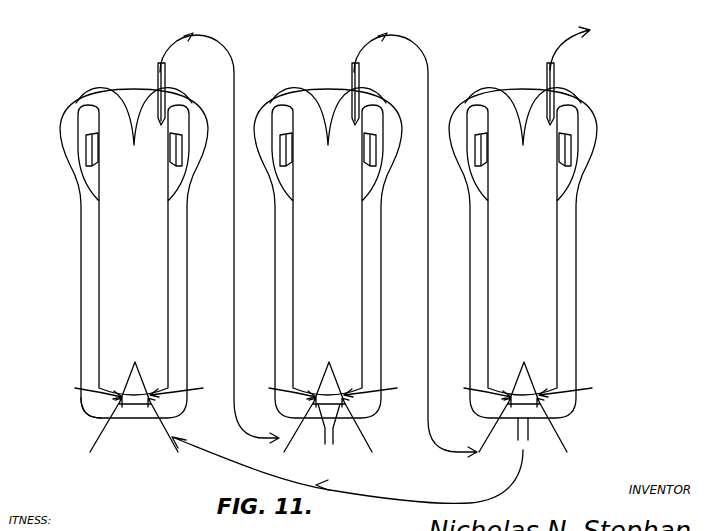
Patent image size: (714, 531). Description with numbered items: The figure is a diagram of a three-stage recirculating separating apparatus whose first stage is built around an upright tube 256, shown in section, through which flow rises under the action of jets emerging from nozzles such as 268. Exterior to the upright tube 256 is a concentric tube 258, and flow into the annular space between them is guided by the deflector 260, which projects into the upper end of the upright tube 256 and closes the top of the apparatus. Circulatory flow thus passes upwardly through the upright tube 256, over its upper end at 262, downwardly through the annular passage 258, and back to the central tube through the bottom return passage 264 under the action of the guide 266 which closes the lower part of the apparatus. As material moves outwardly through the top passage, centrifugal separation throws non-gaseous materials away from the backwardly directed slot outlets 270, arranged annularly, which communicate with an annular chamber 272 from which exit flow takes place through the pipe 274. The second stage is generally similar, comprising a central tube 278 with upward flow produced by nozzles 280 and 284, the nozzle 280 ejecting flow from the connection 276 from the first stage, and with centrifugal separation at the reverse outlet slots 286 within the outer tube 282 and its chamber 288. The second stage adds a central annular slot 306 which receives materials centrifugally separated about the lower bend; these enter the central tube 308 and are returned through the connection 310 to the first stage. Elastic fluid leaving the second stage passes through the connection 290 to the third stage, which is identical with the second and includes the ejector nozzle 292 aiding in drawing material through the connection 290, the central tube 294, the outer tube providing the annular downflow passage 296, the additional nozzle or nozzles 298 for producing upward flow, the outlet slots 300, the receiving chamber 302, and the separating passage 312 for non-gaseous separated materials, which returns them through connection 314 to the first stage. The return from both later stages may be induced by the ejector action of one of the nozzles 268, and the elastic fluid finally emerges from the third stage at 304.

The upright tube 256 is at (102, 263).
The concentric tube 258 is at (80, 291).
The deflector 260 is at (128, 120).
The upper end of tube 262 is at (78, 108).
The bottom return passage 264 is at (95, 416).
The guide 266 is at (133, 410).
The nozzles 268 is at (139, 387).
The backwardly directed slot outlets 270 is at (98, 152).
The annular chamber 272 is at (182, 118).
The pipe 274 is at (168, 80).
The connection 276 is at (235, 102).
The central tube 278 is at (327, 297).
The nozzle 280 is at (279, 388).
The outer casing wall 282 is at (322, 253).
The nozzle 284 is at (382, 388).
The reverse outlet slots 286 is at (328, 155).
The pocket 288 is at (327, 136).
The connection 290 is at (415, 245).
The ejector nozzle 292 is at (475, 388).
The central tube 294 is at (522, 297).
The annular downflow passage 296 is at (517, 253).
The additional nozzles 298 is at (576, 388).
The outlet slots 300 is at (523, 156).
The receiving chamber 302 is at (541, 138).
The outlet 304 is at (583, 52).
The central annular slot 306 is at (348, 434).
The central tube 308 is at (308, 434).
The connection 310 is at (230, 458).
The separating passage 312 is at (537, 445).
The connection 314 is at (404, 501).